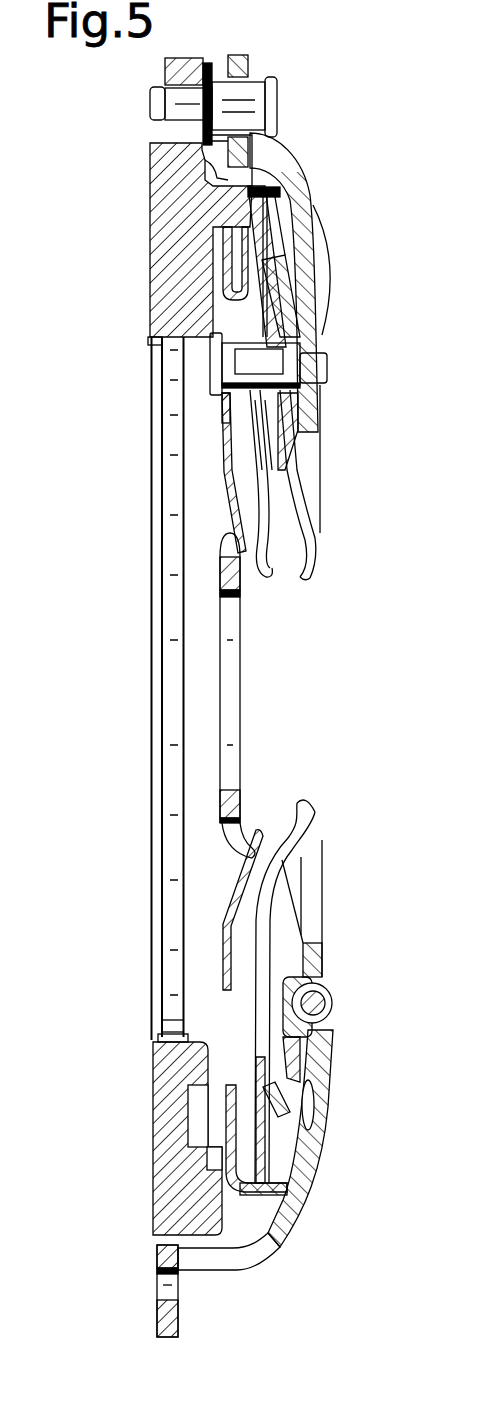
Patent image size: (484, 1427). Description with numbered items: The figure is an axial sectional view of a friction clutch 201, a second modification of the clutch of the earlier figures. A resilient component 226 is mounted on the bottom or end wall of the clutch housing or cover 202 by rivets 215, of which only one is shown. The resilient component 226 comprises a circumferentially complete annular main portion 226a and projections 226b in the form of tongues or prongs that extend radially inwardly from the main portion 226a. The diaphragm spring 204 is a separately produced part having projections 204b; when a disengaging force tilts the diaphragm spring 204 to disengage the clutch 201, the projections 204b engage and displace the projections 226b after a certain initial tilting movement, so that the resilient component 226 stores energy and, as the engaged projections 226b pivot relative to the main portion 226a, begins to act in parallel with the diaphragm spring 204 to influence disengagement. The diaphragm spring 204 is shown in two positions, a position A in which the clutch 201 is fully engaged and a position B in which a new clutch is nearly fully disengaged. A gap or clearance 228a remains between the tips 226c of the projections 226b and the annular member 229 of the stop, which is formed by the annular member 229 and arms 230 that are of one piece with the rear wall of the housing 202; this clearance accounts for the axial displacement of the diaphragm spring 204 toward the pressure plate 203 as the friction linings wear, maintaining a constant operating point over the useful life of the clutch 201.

The friction clutch 201 is at (338, 186).
The clutch housing or cover 202 is at (310, 210).
The pressure plate 203 is at (153, 1140).
The diaphragm spring 204 is at (282, 946).
The projections of the diaphragm spring 204b is at (285, 861).
The rivets 215 is at (327, 370).
The resilient component 226 is at (232, 421).
The main portion 226a is at (225, 406).
The projections of the resilient component 226b is at (262, 519).
The tips of the projections 226c is at (268, 578).
The gap or clearance 228a is at (250, 590).
The annular member 229 is at (228, 580).
The arms 230 is at (300, 464).
The position A is at (262, 441).
The position B is at (260, 484).